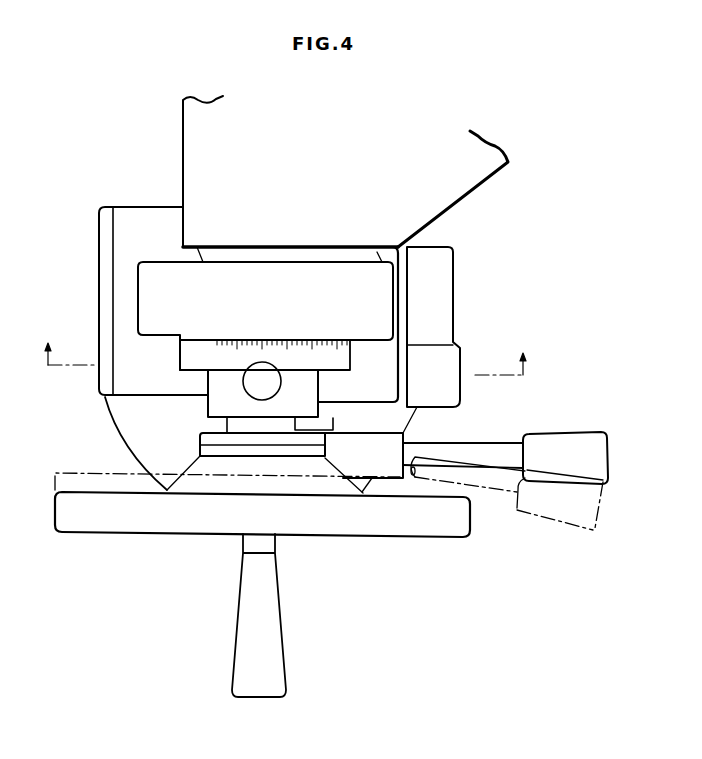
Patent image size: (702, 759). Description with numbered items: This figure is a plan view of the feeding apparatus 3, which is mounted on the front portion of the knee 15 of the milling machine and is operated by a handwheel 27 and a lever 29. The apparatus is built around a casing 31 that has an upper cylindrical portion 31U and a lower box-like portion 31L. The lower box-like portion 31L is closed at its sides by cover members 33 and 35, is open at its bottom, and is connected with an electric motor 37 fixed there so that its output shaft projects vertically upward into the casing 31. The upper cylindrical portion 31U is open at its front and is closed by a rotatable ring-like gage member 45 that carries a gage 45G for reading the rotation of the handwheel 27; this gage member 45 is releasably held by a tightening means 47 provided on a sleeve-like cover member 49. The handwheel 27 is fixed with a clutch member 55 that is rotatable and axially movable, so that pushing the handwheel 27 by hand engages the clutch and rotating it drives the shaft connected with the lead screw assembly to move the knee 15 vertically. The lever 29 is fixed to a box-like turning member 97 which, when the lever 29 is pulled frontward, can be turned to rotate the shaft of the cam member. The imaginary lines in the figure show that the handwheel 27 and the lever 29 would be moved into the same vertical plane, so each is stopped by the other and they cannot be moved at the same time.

The feeding apparatus 3 is at (495, 285).
The knee 15 is at (470, 184).
The handwheel 27 is at (382, 537).
The lever 29 is at (485, 450).
The casing 31 is at (129, 297).
The lower box-like portion 31L is at (151, 216).
The upper cylindrical portion 31U is at (387, 303).
The cover member 33 is at (447, 262).
The cover member 35 is at (107, 247).
The electric motor 37 is at (122, 415).
The gage member 45 is at (350, 350).
The gage 45G is at (320, 338).
The tightening means 47 is at (281, 378).
The sleeve-like cover member 49 is at (325, 412).
The clutch member 55 is at (222, 427).
The turning member 97 is at (402, 476).